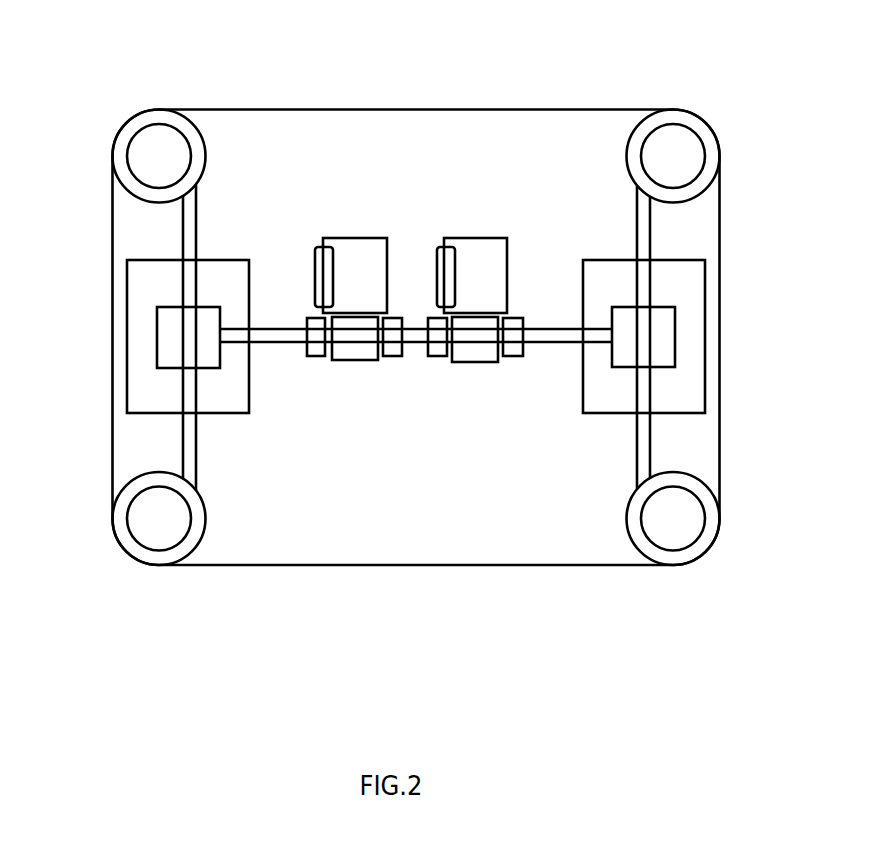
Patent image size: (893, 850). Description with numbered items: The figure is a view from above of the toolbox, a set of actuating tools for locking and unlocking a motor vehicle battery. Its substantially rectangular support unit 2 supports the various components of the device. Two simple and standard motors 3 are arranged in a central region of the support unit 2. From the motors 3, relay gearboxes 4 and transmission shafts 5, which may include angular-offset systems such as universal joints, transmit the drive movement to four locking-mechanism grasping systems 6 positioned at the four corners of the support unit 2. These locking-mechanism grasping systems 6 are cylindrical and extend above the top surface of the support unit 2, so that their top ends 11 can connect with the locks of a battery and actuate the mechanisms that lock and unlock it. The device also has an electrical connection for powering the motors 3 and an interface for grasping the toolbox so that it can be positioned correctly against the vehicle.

The support unit 2 is at (363, 523).
The motor 3 is at (478, 238).
The relay gearbox 4 is at (167, 338).
The transmission shaft 5 is at (652, 240).
The locking-mechanism grasping system 6 is at (162, 108).
The top end 11 is at (162, 158).